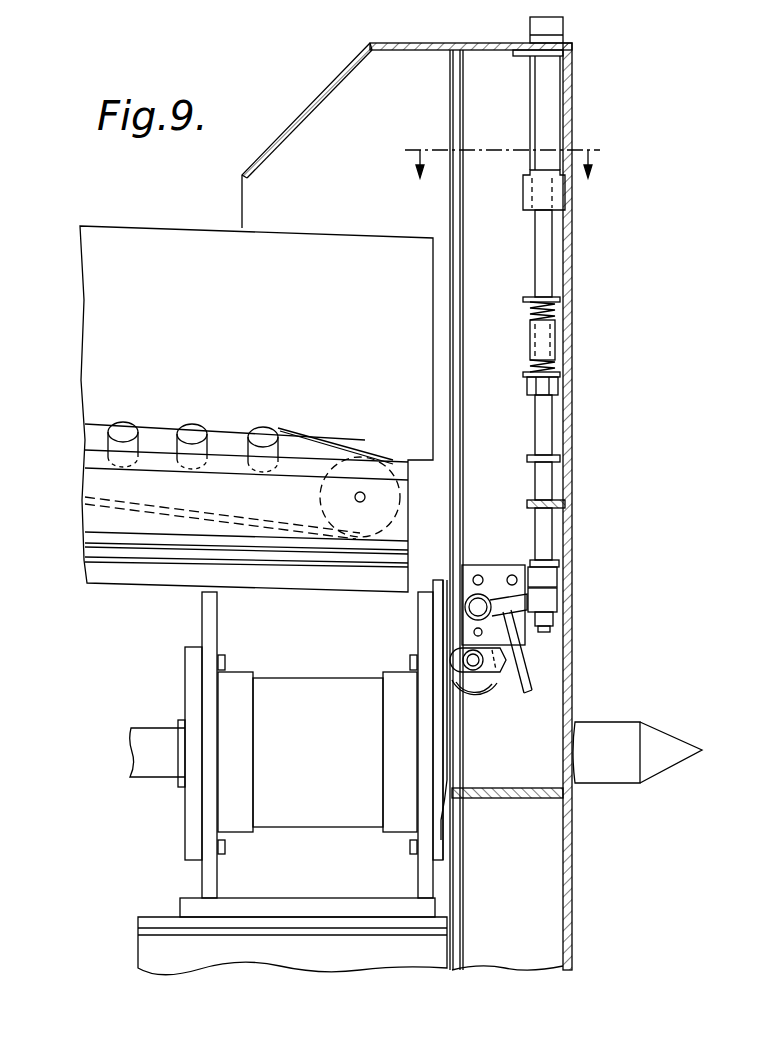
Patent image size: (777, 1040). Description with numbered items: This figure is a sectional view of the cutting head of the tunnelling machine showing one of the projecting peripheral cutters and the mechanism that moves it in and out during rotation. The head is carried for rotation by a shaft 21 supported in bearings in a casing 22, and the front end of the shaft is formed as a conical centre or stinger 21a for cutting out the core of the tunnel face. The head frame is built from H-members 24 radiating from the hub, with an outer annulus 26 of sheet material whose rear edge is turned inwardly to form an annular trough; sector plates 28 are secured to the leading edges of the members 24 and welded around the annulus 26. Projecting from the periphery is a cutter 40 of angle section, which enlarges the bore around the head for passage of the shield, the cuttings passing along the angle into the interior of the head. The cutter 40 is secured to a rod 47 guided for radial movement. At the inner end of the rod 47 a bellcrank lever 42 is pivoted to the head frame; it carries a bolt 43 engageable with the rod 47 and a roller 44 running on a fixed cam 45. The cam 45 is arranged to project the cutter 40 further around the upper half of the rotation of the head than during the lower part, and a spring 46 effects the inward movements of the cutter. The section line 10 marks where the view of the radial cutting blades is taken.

The section line 10 is at (504, 152).
The shaft 21 is at (149, 735).
The conical centre or stinger 21a is at (603, 730).
The casing 22 is at (205, 614).
The H-member 24 is at (465, 96).
The outer annulus 26 is at (442, 45).
The sector plate 28 is at (572, 250).
The cutter 40 is at (530, 27).
The bellcrank lever 42 is at (502, 598).
The bolt 43 is at (556, 583).
The roller 44 is at (487, 682).
The fixed cam 45 is at (436, 742).
The spring 46 is at (530, 312).
The rod 47 is at (534, 232).